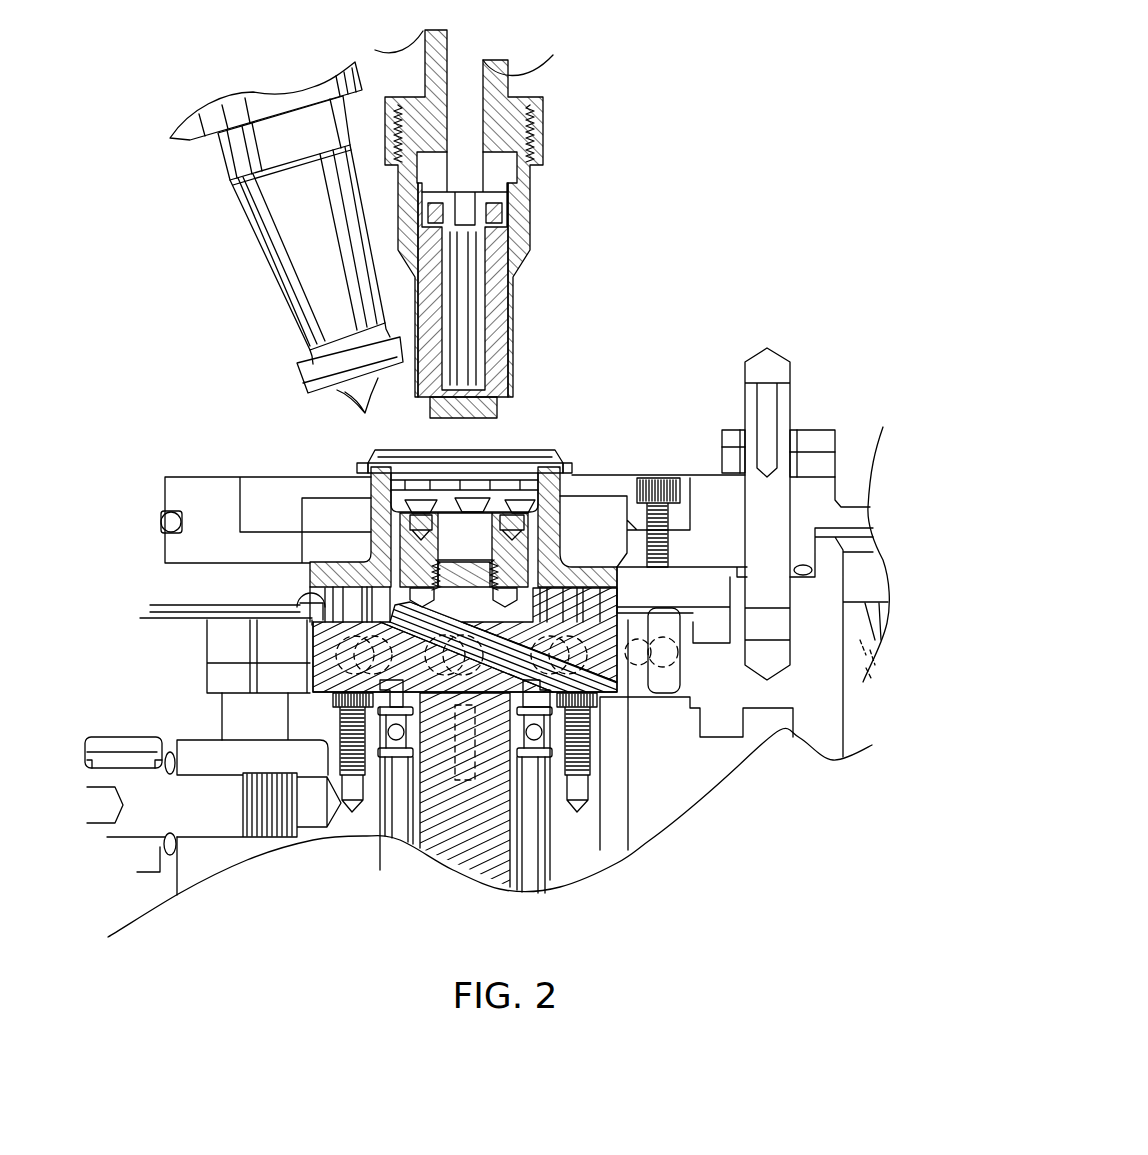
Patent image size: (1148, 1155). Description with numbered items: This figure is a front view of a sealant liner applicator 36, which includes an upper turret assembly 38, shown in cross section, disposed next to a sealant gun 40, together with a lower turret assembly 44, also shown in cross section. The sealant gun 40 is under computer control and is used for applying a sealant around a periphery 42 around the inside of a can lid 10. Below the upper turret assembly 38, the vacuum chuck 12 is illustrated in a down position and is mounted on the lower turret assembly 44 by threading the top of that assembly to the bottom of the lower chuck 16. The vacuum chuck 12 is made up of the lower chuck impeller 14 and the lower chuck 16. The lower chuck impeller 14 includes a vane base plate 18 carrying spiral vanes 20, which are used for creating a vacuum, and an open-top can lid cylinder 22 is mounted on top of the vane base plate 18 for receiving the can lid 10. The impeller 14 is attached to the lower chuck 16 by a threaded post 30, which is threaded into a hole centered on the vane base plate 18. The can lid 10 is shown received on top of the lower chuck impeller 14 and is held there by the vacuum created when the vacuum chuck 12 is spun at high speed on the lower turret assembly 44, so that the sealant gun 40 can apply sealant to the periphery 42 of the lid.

The can lid 10 is at (522, 447).
The vacuum chuck 12 is at (577, 443).
The lower chuck impeller 14 is at (548, 572).
The lower chuck 16 is at (325, 662).
The vane base plate 18 is at (433, 568).
The spiral vanes 20 is at (325, 599).
The can lid cylinder 22 is at (548, 505).
The threaded post 30 is at (462, 578).
The sealant liner applicator 36 is at (696, 193).
The upper turret assembly 38 is at (495, 318).
The sealant gun 40 is at (308, 312).
The periphery 42 is at (372, 452).
The lower turret assembly 44 is at (466, 850).